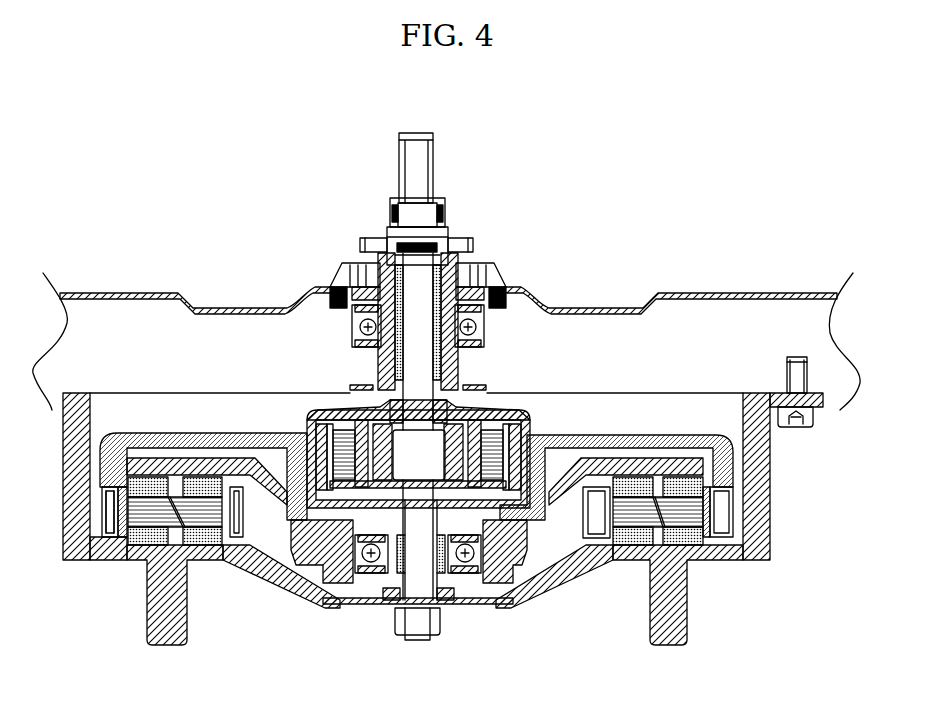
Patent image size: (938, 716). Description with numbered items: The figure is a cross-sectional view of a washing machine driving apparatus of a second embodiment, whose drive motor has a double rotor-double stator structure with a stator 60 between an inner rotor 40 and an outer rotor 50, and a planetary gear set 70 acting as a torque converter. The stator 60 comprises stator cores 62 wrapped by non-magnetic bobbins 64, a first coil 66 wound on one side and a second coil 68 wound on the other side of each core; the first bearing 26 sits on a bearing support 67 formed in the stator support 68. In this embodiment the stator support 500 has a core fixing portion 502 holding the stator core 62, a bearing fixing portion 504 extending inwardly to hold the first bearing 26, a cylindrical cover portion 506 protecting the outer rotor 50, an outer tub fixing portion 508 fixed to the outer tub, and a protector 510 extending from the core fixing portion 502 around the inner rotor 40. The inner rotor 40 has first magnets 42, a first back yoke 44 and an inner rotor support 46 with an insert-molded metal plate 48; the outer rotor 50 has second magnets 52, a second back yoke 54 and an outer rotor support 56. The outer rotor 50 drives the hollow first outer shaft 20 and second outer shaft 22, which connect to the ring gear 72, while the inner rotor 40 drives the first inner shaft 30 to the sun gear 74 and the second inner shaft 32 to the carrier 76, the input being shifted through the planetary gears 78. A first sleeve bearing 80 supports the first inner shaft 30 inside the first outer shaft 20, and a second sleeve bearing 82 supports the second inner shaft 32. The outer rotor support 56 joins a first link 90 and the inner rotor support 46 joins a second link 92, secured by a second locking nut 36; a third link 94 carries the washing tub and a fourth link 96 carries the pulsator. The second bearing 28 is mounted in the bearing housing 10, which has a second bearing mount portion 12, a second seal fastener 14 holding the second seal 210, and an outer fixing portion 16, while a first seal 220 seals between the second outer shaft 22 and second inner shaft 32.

The bearing housing 10 is at (594, 301).
The second bearing mount portion 12 is at (470, 318).
The second seal fastener 14 is at (495, 302).
The outer fixing portion 16 is at (716, 302).
The first outer shaft 20 is at (395, 582).
The second outer shaft 22 is at (357, 287).
The first bearing 26 is at (478, 605).
The second bearing 28 is at (393, 357).
The first inner shaft 30 is at (441, 582).
The second inner shaft 32 is at (455, 285).
The second locking nut 36 is at (437, 628).
The inner rotor 40 is at (293, 597).
The first magnets 42 is at (170, 475).
The first back yoke 44 is at (205, 478).
The inner rotor support 46 is at (250, 557).
The metal plate 48 is at (368, 603).
The outer rotor 50 is at (95, 503).
The second magnets 52 is at (113, 530).
The second back yoke 54 is at (108, 520).
The outer rotor support 56 is at (158, 440).
The stator 60 is at (140, 552).
The stator cores 62 is at (697, 510).
The non-magnetic bobbins 64 is at (700, 470).
The first coil 66 is at (640, 475).
The bearing support 67 is at (478, 575).
The stator support 68 is at (707, 465).
The planetary gear set 70 is at (520, 410).
The ring gear 72 is at (527, 445).
The sun gear 74 is at (425, 455).
The carrier 76 is at (470, 430).
The planetary gears 78 is at (238, 493).
The first sleeve bearing 80 is at (512, 548).
The second sleeve bearing 82 is at (340, 462).
The first link 90 is at (358, 600).
The second link 92 is at (410, 620).
The third link 94 is at (465, 240).
The fourth link 96 is at (433, 152).
The second seal 210 is at (480, 292).
The first seal 220 is at (445, 205).
The stator support 500 is at (636, 565).
The core fixing portion 502 is at (677, 560).
The bearing fixing portion 504 is at (560, 585).
The cover portion 506 is at (773, 492).
The outer tub fixing portion 508 is at (758, 393).
The protector 510 is at (665, 646).